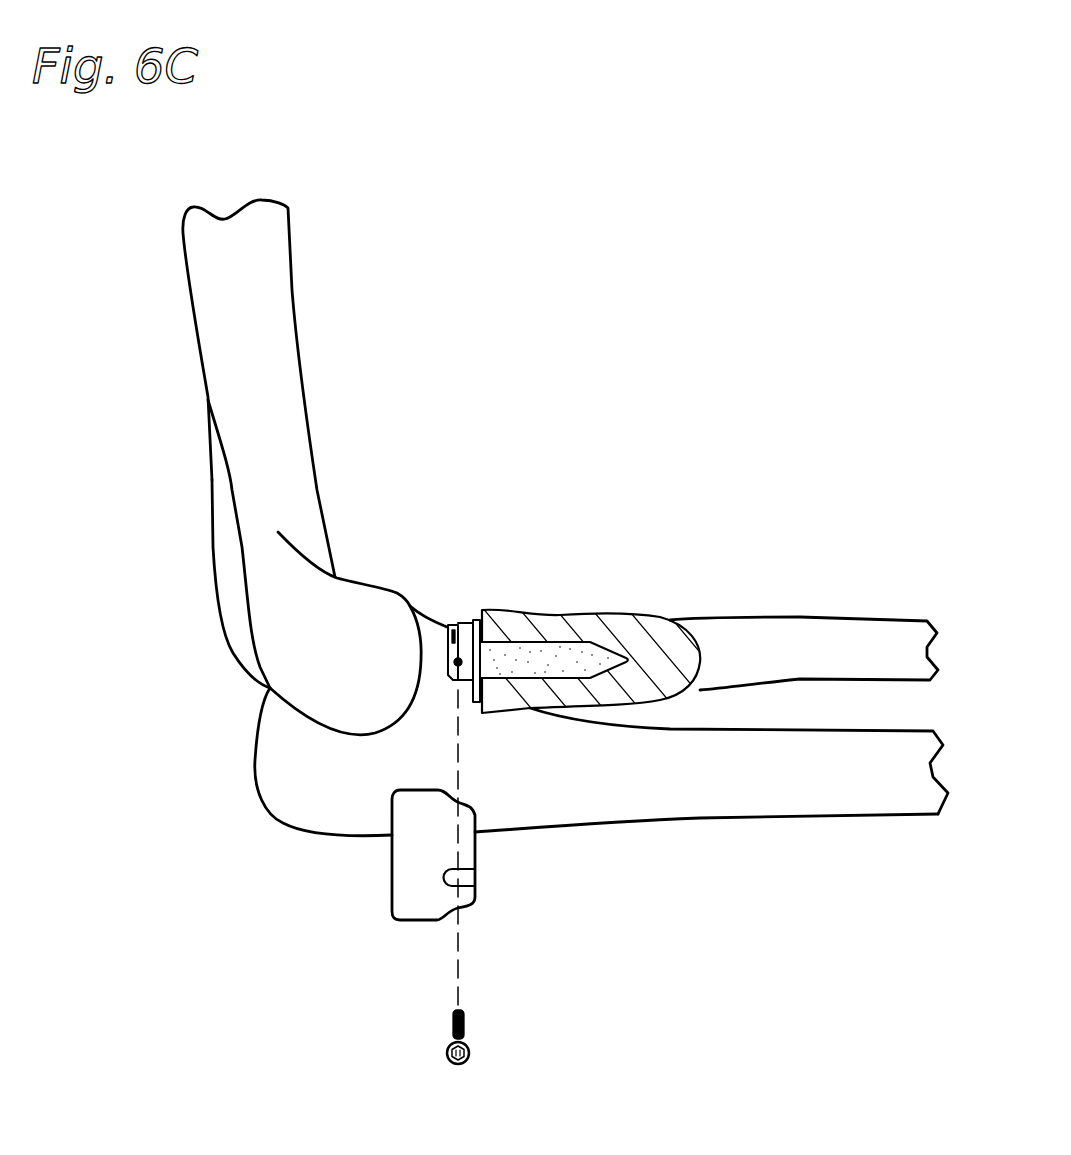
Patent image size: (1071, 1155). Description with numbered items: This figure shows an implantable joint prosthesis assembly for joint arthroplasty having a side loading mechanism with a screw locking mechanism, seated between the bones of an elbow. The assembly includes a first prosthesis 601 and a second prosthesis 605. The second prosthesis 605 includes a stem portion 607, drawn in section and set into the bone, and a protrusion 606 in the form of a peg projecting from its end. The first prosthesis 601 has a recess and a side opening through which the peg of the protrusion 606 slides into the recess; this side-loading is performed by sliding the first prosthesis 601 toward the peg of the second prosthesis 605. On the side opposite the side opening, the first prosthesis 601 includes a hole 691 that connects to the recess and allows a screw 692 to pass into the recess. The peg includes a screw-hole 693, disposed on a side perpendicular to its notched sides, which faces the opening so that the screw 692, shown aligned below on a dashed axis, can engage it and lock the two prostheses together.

The first prosthesis 601 is at (360, 894).
The second prosthesis 605 is at (447, 580).
The protrusion 606 is at (447, 648).
The stem portion 607 is at (536, 648).
The hole 691 is at (450, 882).
The screw 692 is at (452, 1063).
The screw-hole 693 is at (463, 623).